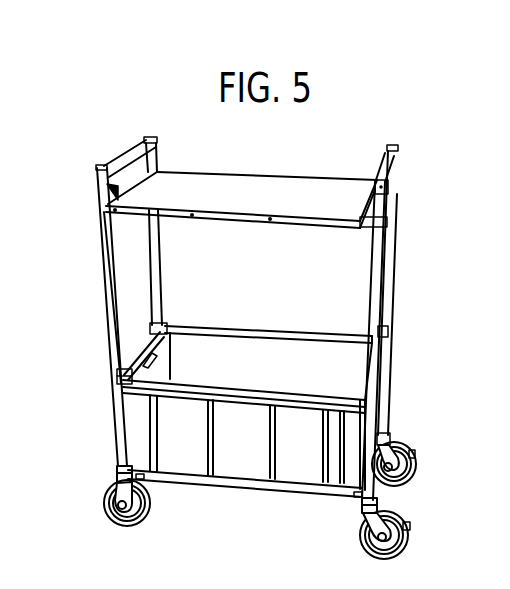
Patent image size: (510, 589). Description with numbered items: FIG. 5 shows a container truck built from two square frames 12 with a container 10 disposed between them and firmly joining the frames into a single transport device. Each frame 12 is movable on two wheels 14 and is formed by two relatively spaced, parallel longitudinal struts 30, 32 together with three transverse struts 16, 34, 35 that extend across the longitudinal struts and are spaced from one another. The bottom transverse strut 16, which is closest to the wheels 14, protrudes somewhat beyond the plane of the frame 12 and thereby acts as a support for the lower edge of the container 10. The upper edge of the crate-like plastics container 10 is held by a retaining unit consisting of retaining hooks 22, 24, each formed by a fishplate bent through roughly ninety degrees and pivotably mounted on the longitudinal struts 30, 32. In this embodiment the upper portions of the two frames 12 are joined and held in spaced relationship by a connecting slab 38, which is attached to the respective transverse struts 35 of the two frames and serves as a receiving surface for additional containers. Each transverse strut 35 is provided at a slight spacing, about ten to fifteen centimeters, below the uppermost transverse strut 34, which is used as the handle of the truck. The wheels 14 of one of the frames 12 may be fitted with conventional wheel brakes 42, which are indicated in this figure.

The container 10 is at (252, 322).
The square frame 12 is at (100, 270).
The wheels 14 is at (104, 505).
The bottom transverse strut 16 is at (143, 481).
The retaining hook 22 is at (127, 366).
The retaining hook 24 is at (163, 322).
The longitudinal strut 30 is at (101, 238).
The longitudinal strut 32 is at (159, 240).
The uppermost transverse strut 34 is at (124, 158).
The transverse strut 35 is at (106, 190).
The connecting slab 38 is at (258, 180).
The wheel brakes 42 is at (414, 452).